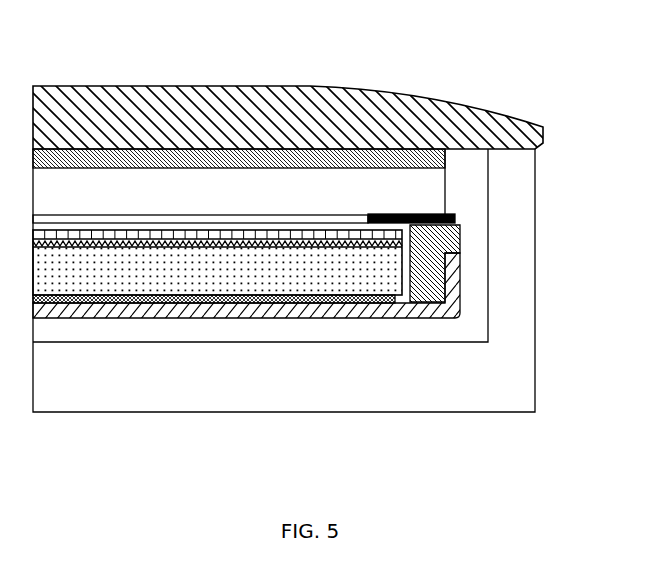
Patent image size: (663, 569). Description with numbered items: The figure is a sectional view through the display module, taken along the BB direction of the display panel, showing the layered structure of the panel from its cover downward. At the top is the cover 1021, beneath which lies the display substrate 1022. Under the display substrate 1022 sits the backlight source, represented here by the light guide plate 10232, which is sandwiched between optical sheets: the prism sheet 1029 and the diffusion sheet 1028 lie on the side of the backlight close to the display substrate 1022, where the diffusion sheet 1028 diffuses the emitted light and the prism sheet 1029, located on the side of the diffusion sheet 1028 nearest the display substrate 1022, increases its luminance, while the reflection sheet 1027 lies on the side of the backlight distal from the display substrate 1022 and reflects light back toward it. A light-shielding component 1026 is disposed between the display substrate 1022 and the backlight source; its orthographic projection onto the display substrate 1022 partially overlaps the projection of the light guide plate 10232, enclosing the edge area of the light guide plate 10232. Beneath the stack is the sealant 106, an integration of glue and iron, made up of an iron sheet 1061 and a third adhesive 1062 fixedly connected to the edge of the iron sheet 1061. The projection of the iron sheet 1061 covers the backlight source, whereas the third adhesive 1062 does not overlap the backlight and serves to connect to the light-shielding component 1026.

The cover 1021 is at (388, 127).
The display substrate 1022 is at (187, 198).
The light guide plate 10232 is at (98, 278).
The light-shielding component 1026 is at (455, 218).
The reflection sheet 1027 is at (277, 297).
The diffusion sheet 1028 is at (215, 245).
The prism sheet 1029 is at (156, 232).
The sealant 106 is at (395, 465).
The iron sheet 1061 is at (393, 308).
The third adhesive 1062 is at (433, 278).